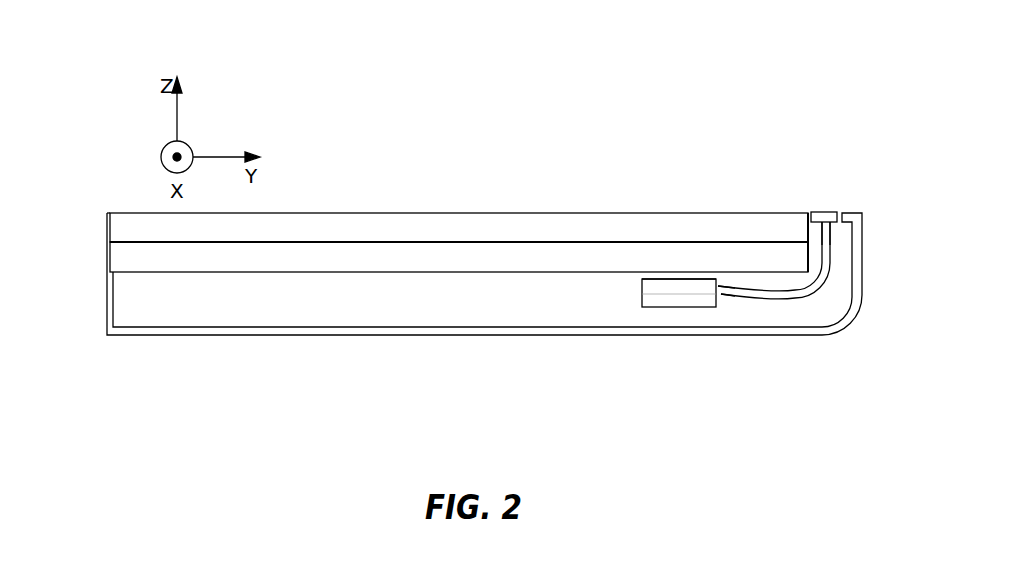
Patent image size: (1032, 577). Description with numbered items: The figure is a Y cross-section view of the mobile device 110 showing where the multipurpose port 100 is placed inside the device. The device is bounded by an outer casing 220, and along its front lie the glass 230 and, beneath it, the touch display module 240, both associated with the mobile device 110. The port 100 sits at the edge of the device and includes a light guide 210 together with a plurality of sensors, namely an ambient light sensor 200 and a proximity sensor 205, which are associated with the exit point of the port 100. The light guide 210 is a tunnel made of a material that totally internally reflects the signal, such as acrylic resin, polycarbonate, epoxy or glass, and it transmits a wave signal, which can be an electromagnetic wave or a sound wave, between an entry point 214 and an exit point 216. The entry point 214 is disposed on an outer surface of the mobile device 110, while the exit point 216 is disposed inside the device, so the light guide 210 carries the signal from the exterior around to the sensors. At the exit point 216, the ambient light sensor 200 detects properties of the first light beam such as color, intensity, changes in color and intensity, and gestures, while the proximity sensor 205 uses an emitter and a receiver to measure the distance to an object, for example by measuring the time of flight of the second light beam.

The mobile device 110 is at (662, 139).
The multipurpose port 100 is at (838, 212).
The ambient light sensor 200 is at (658, 304).
The proximity sensor 205 is at (697, 286).
The light guide 210 is at (818, 292).
The entry point 214 is at (829, 225).
The exit point 216 is at (719, 298).
The outer casing 220 is at (490, 330).
The glass 230 is at (108, 213).
The touch display module 240 is at (117, 257).